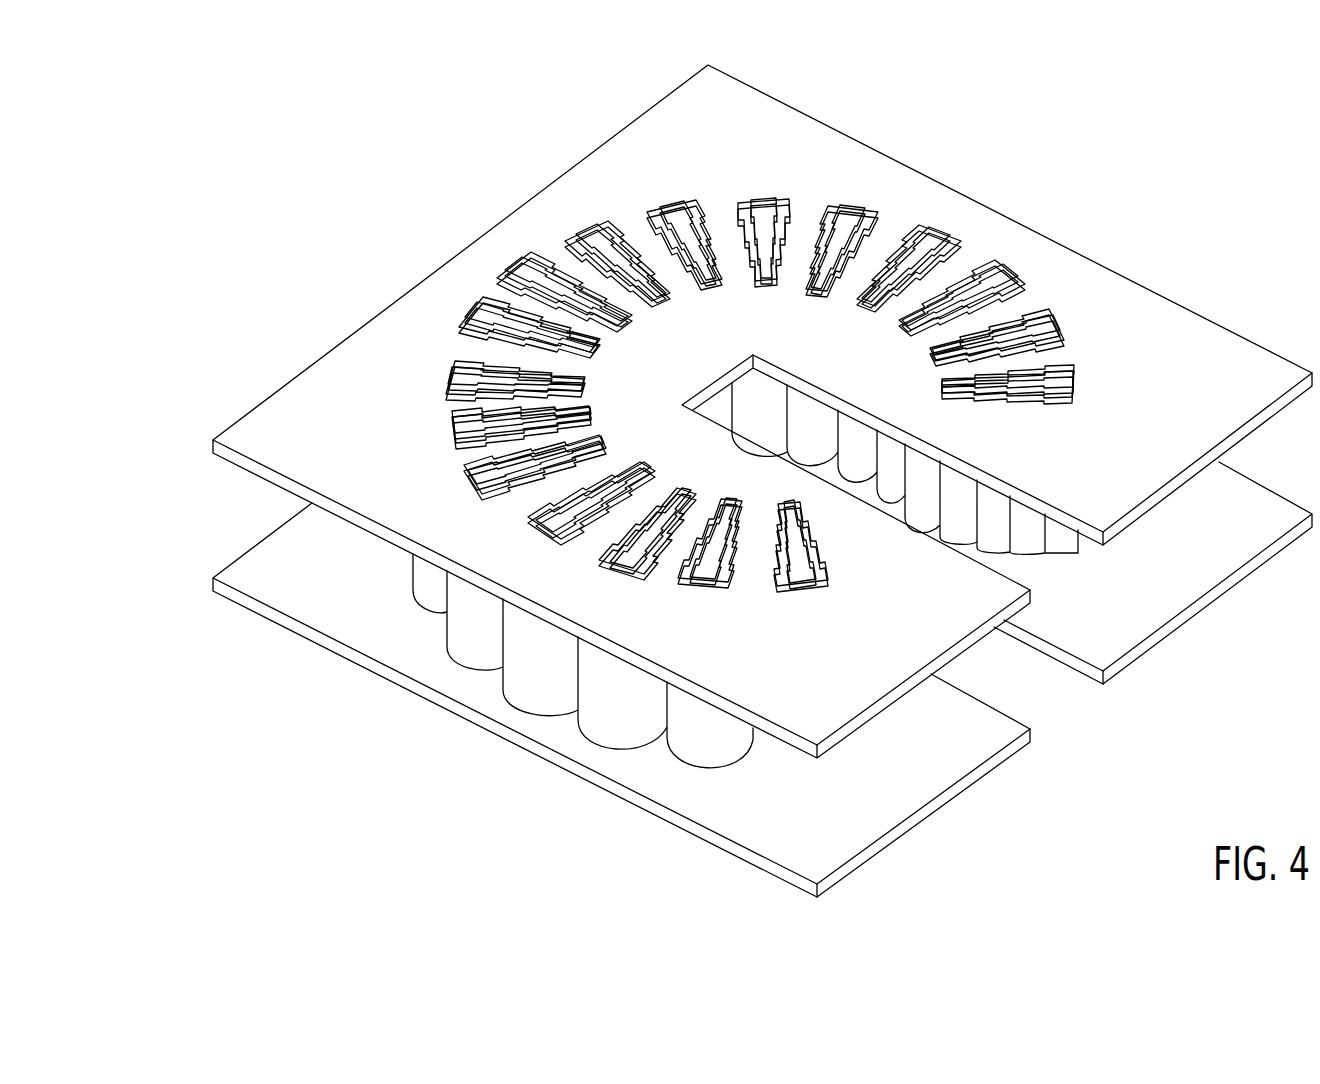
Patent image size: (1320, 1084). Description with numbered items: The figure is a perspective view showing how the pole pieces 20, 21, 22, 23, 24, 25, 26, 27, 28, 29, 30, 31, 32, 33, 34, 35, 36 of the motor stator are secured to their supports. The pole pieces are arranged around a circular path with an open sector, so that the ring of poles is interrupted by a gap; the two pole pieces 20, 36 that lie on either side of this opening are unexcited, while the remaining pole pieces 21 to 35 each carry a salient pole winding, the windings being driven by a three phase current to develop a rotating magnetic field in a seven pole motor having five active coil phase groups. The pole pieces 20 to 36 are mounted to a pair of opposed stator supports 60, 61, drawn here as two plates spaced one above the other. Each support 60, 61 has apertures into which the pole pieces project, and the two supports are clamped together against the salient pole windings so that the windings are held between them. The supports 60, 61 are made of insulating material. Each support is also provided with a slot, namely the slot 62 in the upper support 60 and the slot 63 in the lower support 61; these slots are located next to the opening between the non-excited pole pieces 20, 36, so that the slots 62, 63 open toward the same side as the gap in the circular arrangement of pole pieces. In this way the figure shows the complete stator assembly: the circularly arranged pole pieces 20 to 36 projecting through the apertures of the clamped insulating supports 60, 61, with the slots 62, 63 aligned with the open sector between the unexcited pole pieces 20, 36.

The pole piece 20 is at (808, 588).
The pole piece 21 is at (700, 588).
The pole piece 22 is at (606, 574).
The pole piece 23 is at (539, 537).
The pole piece 24 is at (478, 493).
The pole piece 25 is at (450, 443).
The pole piece 26 is at (440, 386).
The pole piece 27 is at (447, 327).
The pole piece 28 is at (497, 275).
The pole piece 29 is at (587, 231).
The pole piece 30 is at (667, 207).
The pole piece 31 is at (759, 195).
The pole piece 32 is at (857, 204).
The pole piece 33 is at (964, 233).
The pole piece 34 is at (1013, 276).
The pole piece 35 is at (1075, 332).
The pole piece 36 is at (1084, 386).
The stator support 60 is at (248, 470).
The stator support 61 is at (248, 551).
The slot 62 is at (986, 512).
The slot 63 is at (1032, 680).